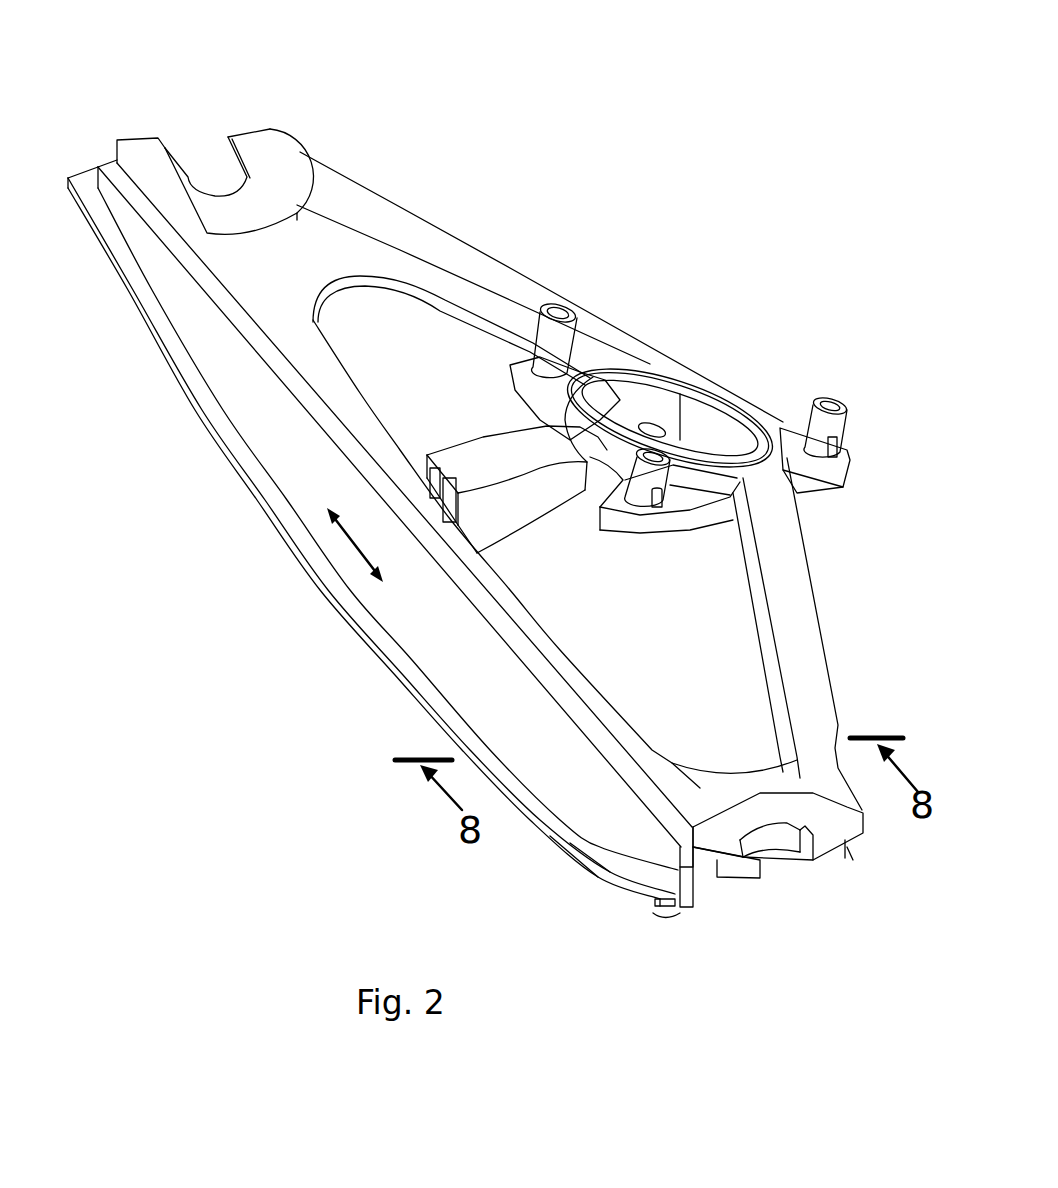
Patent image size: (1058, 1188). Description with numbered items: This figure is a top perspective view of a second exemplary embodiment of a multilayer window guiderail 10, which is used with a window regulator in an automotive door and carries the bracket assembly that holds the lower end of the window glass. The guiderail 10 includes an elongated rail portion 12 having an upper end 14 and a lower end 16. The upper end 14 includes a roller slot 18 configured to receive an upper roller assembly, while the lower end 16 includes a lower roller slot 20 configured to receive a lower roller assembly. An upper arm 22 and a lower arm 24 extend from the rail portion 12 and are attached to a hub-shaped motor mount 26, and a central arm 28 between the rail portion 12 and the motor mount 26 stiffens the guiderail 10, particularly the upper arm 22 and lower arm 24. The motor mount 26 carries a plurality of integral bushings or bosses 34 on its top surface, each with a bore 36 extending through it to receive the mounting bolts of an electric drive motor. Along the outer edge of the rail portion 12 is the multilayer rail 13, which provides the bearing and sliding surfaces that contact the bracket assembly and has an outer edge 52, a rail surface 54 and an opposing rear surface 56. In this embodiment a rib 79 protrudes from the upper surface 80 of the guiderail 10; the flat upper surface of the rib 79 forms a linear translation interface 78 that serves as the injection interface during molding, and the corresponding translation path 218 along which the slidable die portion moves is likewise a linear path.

The multilayer window guiderail 10 is at (560, 133).
The rail portion 12 is at (228, 345).
The multilayer rail 13 is at (665, 918).
The upper end 14 is at (140, 140).
The lower end 16 is at (688, 862).
The roller slot 18 is at (200, 148).
The lower roller slot 20 is at (768, 840).
The upper arm 22 is at (508, 270).
The lower arm 24 is at (787, 573).
The motor mount 26 is at (757, 425).
The central arm 28 is at (490, 522).
The bosses 34 is at (540, 338).
The bores 36 is at (560, 312).
The outer edge 52 is at (592, 862).
The rail surface 54 is at (628, 878).
The rear surface 56 is at (670, 898).
The translation interface 78 is at (340, 445).
The rib 79 is at (687, 852).
The upper surface 80 is at (288, 262).
The translation path 218 is at (355, 548).